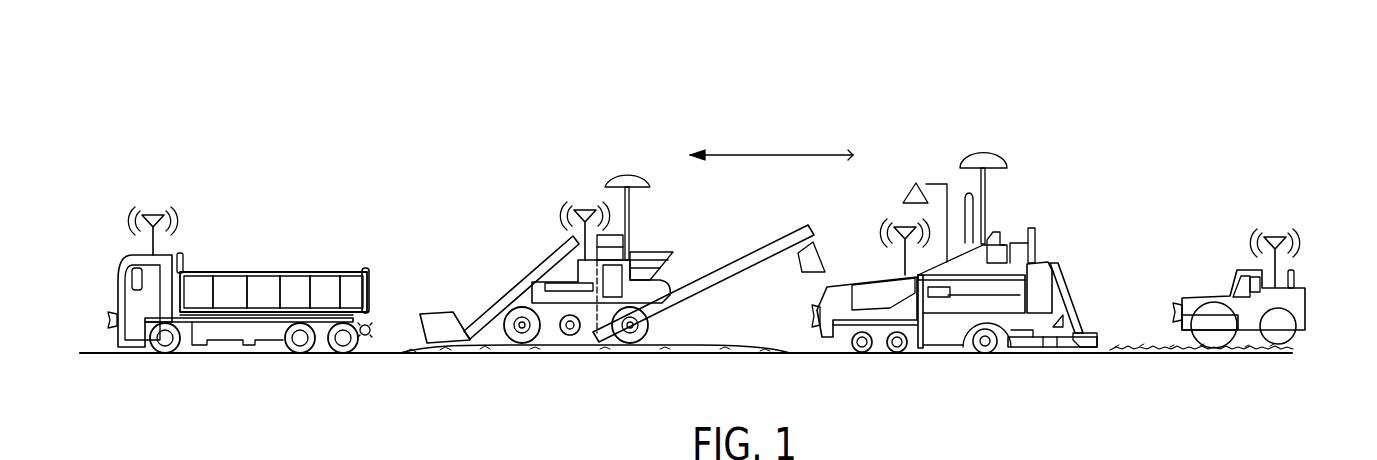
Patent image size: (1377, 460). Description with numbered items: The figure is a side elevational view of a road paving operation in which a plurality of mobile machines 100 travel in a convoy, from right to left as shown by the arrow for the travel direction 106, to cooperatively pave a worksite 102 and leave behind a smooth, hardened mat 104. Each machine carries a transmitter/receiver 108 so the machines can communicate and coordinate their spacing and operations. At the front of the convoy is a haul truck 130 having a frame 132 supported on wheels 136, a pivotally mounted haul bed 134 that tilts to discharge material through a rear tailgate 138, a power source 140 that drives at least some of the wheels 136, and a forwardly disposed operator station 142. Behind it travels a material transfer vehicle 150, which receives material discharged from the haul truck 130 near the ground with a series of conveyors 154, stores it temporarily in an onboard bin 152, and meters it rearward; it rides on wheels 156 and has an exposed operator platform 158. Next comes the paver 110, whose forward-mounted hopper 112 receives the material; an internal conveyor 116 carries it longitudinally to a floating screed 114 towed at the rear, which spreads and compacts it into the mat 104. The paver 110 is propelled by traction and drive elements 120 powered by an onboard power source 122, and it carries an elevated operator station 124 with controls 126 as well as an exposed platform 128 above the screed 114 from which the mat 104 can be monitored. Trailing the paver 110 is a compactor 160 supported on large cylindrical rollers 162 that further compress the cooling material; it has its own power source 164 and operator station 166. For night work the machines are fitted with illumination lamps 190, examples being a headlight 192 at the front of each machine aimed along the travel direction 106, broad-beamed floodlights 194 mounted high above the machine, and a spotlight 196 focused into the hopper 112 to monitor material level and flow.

The mobile machine 100 is at (1274, 98).
The worksite 102 is at (748, 334).
The mat 104 is at (1133, 330).
The travel direction 106 is at (760, 153).
The transmitter/receiver 108 is at (153, 212).
The paver 110 is at (1038, 160).
The hopper 112 is at (848, 277).
The screed 114 is at (1078, 297).
The conveyor 116 is at (943, 323).
The traction and drive elements 120 is at (880, 360).
The power source 122 is at (941, 293).
The operator station 124 is at (1044, 232).
The controls 126 is at (1010, 232).
The platform 128 is at (1057, 262).
The haul truck 130 is at (226, 208).
The frame 132 is at (243, 343).
The haul bed 134 is at (266, 272).
The wheels 136 is at (168, 353).
The tailgate 138 is at (370, 284).
The power source 140 is at (131, 347).
The operator station 142 is at (116, 261).
The material transfer vehicle 150 is at (505, 212).
The bin 152 is at (557, 337).
The conveyors 154 is at (531, 249).
The wheels 156 is at (657, 327).
The operator platform 158 is at (640, 250).
The compactor 160 is at (1308, 262).
The rollers 162 is at (1215, 342).
The power source 164 is at (1292, 303).
The operator station 166 is at (1233, 271).
The illumination lamps 190 is at (933, 88).
The headlight 192 is at (107, 318).
The floodlights 194 is at (985, 150).
The spotlights 196 is at (913, 183).